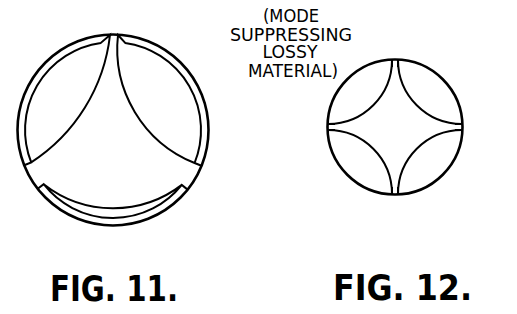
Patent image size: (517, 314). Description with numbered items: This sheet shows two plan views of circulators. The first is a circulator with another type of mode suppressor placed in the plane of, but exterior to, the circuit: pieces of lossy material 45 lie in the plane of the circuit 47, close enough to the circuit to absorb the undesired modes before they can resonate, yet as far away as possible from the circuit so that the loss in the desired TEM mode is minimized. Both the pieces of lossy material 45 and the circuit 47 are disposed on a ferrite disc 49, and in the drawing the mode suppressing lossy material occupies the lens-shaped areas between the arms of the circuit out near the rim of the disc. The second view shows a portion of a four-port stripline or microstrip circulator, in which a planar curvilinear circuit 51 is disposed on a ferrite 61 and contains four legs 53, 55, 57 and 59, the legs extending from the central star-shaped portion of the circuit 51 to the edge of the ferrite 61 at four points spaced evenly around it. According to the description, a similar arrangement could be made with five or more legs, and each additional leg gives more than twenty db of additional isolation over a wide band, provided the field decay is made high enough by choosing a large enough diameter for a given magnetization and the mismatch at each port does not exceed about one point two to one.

In FIG. 11, the lossy material 45 is at (168, 112).
In FIG. 11, the circuit 47 is at (113, 110).
In FIG. 11, the ferrite disc 49 is at (178, 198).
In FIG. 12, the circuit 51 is at (401, 129).
In FIG. 12, the leg 53 is at (462, 133).
In FIG. 12, the leg 55 is at (400, 192).
In FIG. 12, the leg 57 is at (332, 134).
In FIG. 12, the leg 59 is at (398, 60).
In FIG. 12, the ferrite 61 is at (433, 90).